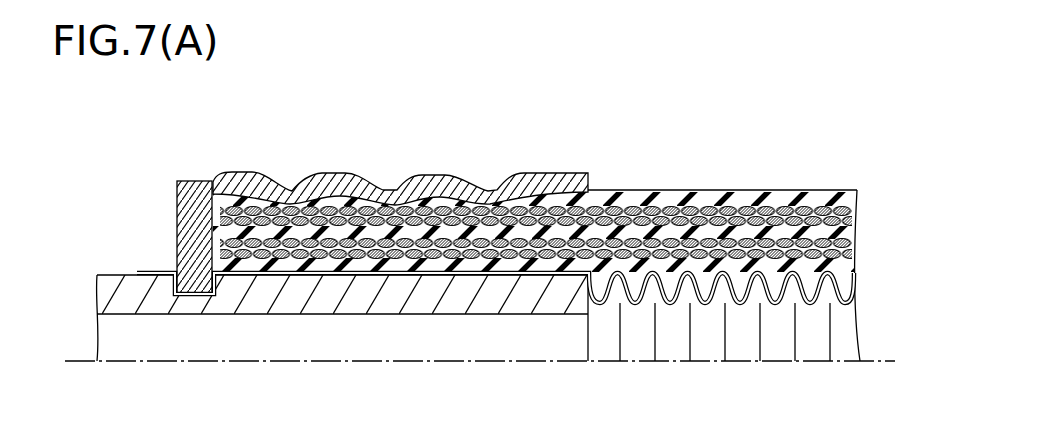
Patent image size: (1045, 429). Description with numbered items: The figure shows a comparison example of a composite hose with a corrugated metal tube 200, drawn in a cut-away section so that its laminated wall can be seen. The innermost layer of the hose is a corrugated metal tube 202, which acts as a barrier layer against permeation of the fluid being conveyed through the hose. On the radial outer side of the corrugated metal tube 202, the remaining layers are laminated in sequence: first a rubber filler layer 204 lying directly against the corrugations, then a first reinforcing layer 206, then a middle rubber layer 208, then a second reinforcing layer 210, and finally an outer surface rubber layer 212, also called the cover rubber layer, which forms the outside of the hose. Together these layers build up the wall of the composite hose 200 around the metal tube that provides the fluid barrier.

The composite hose with a corrugated metal tube 200 is at (528, 251).
The corrugated metal tube 202 is at (705, 332).
The rubber filler layer 204 is at (849, 270).
The first reinforcing layer 206 is at (845, 255).
The middle rubber layer 208 is at (826, 232).
The second reinforcing layer 210 is at (838, 199).
The outer surface rubber layer 212 is at (826, 199).